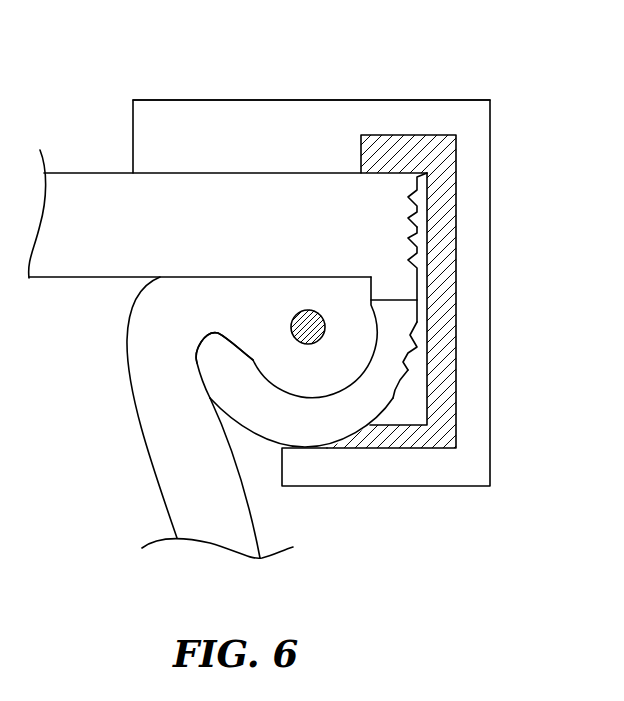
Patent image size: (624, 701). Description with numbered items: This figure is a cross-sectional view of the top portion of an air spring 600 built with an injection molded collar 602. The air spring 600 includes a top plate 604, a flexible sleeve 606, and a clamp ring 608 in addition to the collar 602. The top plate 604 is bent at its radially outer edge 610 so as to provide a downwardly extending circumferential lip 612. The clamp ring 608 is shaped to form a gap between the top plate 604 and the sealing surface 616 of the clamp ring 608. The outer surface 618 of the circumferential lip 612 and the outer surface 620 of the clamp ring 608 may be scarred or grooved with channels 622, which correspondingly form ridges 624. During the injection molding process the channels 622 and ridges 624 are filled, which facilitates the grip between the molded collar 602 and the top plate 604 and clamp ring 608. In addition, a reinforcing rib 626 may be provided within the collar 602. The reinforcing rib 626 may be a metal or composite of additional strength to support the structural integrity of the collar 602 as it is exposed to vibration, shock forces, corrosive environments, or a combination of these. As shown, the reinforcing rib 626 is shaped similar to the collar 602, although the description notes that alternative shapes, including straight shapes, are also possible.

The air spring 600 is at (558, 72).
The injection molded collar 602 is at (477, 170).
The top plate 604 is at (80, 185).
The flexible sleeve 606 is at (172, 474).
The clamp ring 608 is at (319, 430).
The radially outer edge 610 is at (332, 118).
The circumferential lip 612 is at (400, 273).
The sealing surface 616 is at (212, 348).
The outer surface of the circumferential lip 618 is at (413, 212).
The outer surface of the clamp ring 620 is at (400, 390).
The channels 622 is at (415, 245).
The ridges 624 is at (427, 355).
The reinforcing rib 626 is at (455, 312).